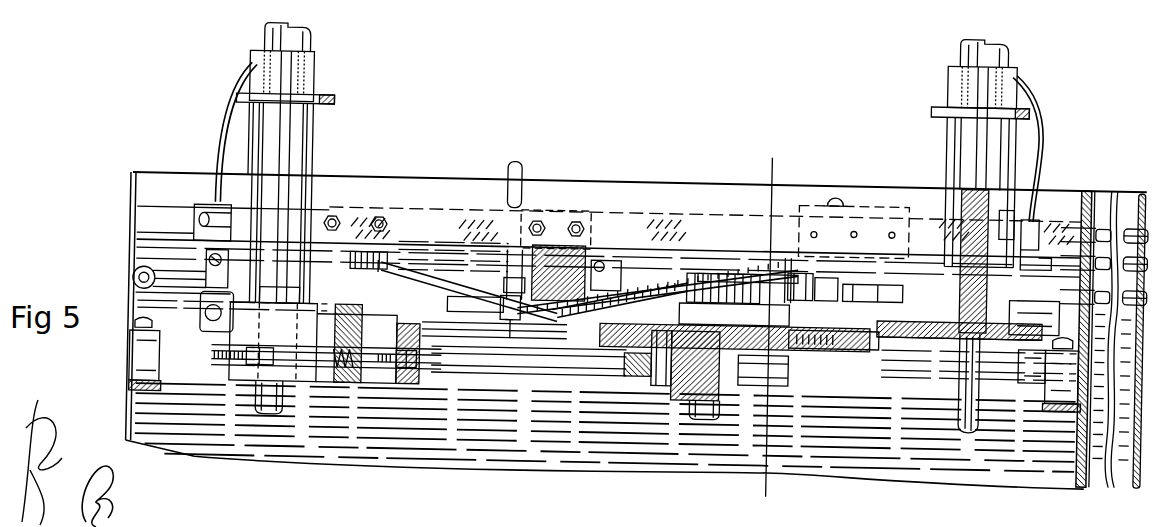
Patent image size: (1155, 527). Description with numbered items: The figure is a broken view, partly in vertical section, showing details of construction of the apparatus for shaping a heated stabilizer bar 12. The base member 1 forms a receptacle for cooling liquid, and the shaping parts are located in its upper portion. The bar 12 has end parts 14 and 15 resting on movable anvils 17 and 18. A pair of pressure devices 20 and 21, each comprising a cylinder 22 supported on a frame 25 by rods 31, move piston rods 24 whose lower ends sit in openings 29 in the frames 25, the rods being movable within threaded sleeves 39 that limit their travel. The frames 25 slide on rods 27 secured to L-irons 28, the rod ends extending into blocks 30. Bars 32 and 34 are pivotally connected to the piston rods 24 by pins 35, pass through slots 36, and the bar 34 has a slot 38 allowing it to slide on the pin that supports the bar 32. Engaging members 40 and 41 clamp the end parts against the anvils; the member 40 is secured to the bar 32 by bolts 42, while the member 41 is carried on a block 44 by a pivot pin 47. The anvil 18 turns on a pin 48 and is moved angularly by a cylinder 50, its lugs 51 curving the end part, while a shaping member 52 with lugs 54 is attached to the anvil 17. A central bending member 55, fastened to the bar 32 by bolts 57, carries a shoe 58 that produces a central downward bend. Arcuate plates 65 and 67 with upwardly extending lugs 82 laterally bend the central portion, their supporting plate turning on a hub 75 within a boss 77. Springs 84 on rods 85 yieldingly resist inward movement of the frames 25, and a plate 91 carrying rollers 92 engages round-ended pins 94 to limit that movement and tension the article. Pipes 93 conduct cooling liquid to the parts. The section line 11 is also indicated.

The base member 1 is at (135, 200).
The section line 11 is at (762, 150).
The bar 12 is at (455, 299).
The end part 14 is at (388, 252).
The end part 15 is at (845, 266).
The anvil 17 is at (320, 316).
The anvil 18 is at (825, 276).
The pressure device 20 is at (277, 79).
The pressure device 21 is at (973, 83).
The cylinder 22 is at (285, 31).
The piston rod 24 is at (280, 150).
The frame 25 is at (243, 316).
The rod 27 is at (177, 349).
The L-iron 28 is at (140, 388).
The opening 29 is at (1028, 322).
The block 30 is at (145, 352).
The rod 31 is at (253, 116).
The bar 32 is at (625, 210).
The bar 34 is at (180, 231).
The pin 35 is at (200, 217).
The slot 36 is at (1030, 222).
The slot 38 is at (225, 213).
The threaded sleeve 39 is at (268, 292).
The engaging member 40 is at (390, 257).
The engaging member 41 is at (790, 252).
The bolt 42 is at (380, 210).
The block 44 is at (852, 183).
The pivot pin 47 is at (835, 191).
The pin 48 is at (830, 336).
The cylinder 50 is at (912, 244).
The lug 51 is at (800, 257).
The shaping member 52 is at (470, 314).
The lug 54 is at (505, 312).
The central bending member 55 is at (572, 256).
The bolt 57 is at (577, 211).
The shoe 58 is at (620, 265).
The arcuate plate 65 is at (663, 272).
The arcuate plate 67 is at (715, 288).
The hub 75 is at (672, 384).
The boss 77 is at (702, 386).
The lug 82 is at (738, 262).
The spring 84 is at (345, 306).
The rod 85 is at (313, 348).
The plate 91 is at (660, 359).
The roller 92 is at (625, 348).
The pipe 93 is at (145, 270).
The round-ended pin 94 is at (575, 351).